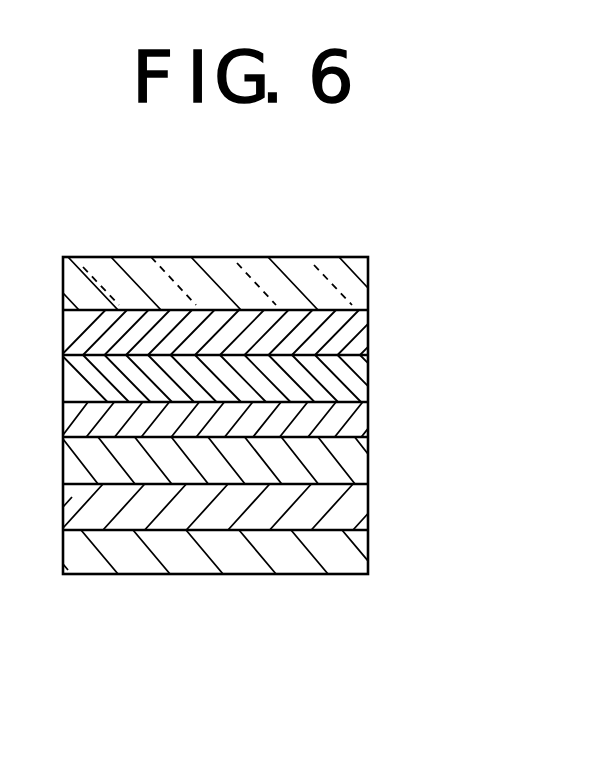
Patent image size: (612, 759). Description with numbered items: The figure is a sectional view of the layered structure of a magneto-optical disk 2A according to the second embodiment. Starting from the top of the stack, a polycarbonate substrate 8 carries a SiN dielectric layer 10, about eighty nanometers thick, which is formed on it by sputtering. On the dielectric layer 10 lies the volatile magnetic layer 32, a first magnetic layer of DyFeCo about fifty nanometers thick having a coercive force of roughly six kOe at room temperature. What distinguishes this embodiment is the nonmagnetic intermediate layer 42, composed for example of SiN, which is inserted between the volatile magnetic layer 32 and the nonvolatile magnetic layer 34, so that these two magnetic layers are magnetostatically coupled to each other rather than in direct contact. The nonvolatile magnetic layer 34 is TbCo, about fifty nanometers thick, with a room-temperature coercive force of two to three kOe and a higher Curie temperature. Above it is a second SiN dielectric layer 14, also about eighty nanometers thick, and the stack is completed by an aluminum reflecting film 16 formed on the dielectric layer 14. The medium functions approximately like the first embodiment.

The magneto-optical disk 2A is at (243, 252).
The polycarbonate substrate 8 is at (370, 276).
The SiN dielectric layer 10 is at (368, 334).
The volatile magnetic layer 32 is at (368, 382).
The nonmagnetic intermediate layer 42 is at (368, 422).
The nonvolatile magnetic layer 34 is at (368, 464).
The SiN dielectric layer 14 is at (368, 509).
The reflecting film 16 is at (368, 565).